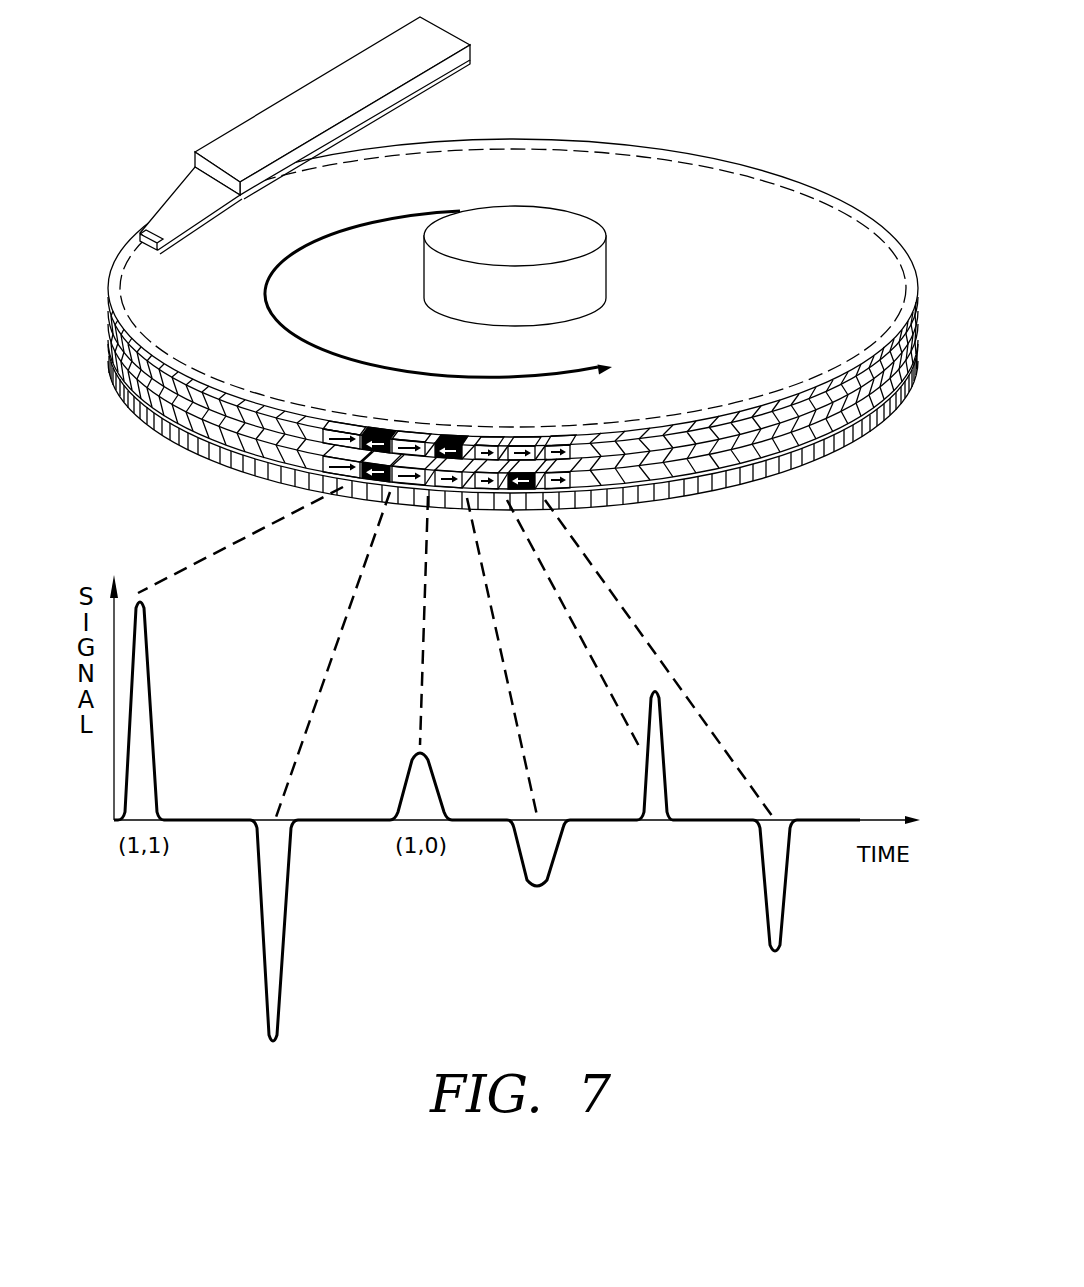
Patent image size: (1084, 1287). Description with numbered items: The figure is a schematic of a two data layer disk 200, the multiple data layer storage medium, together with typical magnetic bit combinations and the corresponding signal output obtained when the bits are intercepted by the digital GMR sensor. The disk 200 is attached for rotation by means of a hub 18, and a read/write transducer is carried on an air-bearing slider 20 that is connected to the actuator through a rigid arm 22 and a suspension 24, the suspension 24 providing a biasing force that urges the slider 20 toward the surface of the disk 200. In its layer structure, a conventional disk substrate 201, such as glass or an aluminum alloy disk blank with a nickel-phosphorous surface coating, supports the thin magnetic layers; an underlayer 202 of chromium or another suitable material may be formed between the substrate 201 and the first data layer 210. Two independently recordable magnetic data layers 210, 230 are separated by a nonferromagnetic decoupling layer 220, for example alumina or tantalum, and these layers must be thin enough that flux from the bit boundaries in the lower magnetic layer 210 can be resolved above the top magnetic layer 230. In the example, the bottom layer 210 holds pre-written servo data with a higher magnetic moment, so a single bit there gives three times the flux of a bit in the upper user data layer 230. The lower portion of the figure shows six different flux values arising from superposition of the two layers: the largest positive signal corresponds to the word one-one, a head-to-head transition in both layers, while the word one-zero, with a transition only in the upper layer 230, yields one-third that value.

The hub 18 is at (555, 218).
The air-bearing slider 20 is at (137, 249).
The rigid arm 22 is at (345, 78).
The suspension 24 is at (173, 203).
The disk 200 is at (822, 188).
The disk substrate 201 is at (863, 427).
The underlayer 202 is at (833, 442).
The first data layer 210 is at (788, 457).
The decoupling layer 220 is at (742, 453).
The top magnetic layer 230 is at (700, 462).